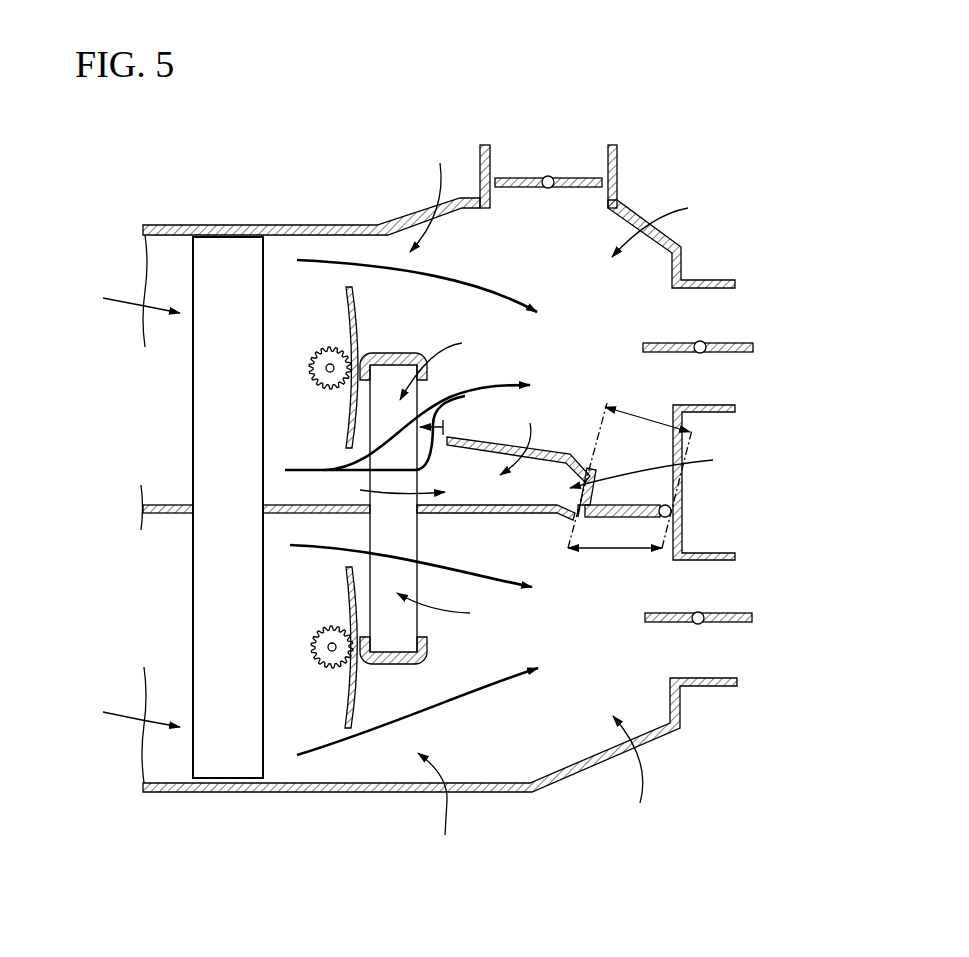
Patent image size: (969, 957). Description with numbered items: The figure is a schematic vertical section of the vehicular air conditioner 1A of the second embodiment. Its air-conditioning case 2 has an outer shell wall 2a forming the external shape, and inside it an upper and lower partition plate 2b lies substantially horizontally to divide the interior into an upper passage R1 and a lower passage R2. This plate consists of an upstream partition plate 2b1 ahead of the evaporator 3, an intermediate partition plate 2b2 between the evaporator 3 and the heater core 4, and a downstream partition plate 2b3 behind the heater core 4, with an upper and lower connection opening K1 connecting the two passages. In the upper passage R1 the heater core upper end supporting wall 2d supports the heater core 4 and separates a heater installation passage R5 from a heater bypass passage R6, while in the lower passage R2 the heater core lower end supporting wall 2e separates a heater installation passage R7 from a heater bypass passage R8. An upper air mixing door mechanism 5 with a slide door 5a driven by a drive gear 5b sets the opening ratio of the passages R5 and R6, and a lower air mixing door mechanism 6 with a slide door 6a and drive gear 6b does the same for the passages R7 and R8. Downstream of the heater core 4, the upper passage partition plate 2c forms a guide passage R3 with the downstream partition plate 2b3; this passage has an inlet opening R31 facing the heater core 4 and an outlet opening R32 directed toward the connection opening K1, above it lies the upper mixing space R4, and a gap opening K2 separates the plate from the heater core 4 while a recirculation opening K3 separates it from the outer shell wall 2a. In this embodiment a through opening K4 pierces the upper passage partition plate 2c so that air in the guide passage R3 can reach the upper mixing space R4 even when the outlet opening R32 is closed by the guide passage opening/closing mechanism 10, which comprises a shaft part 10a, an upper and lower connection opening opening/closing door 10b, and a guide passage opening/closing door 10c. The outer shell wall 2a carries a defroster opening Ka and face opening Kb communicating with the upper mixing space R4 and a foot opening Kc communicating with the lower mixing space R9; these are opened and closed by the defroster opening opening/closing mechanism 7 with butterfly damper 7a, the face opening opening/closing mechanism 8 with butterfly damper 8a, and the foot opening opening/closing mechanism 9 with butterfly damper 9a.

The vehicular air conditioner 1A is at (768, 146).
The air-conditioning case 2 is at (349, 222).
The outer shell wall 2a is at (310, 225).
The upper and lower partition plate 2b is at (346, 492).
The upstream partition plate 2b1 is at (168, 504).
The intermediate partition plate 2b2 is at (293, 513).
The downstream partition plate 2b3 is at (487, 513).
The upper passage partition plate 2c is at (545, 446).
The heater core upper end supporting wall 2d is at (400, 353).
The heater core lower end supporting wall 2e is at (430, 663).
The evaporator 3 is at (217, 250).
The heater core 4 is at (432, 480).
The upper air mixing door mechanism 5 is at (311, 358).
The slide door 5a is at (349, 302).
The drive gear 5b is at (322, 360).
The lower air mixing door mechanism 6 is at (312, 640).
The slide door 6a is at (350, 595).
The drive gear 6b is at (325, 656).
The defroster opening opening/closing mechanism 7 is at (548, 150).
The butterfly damper 7a is at (523, 187).
The face opening opening/closing mechanism 8 is at (727, 338).
The butterfly damper 8a is at (680, 342).
The foot opening opening/closing mechanism 9 is at (729, 649).
The butterfly damper 9a is at (677, 625).
The guide passage opening/closing mechanism 10 is at (679, 509).
The shaft part 10a is at (670, 513).
The upper and lower connection opening opening/closing door 10b is at (625, 518).
The guide passage opening/closing door 10c is at (597, 482).
The defroster opening Ka is at (490, 165).
The face opening Kb is at (725, 288).
The foot opening Kc is at (725, 560).
The upper and lower connection opening K1 is at (610, 550).
The gap opening K2 is at (443, 427).
The recirculation opening K3 is at (637, 403).
The through opening K4 is at (500, 443).
The upper passage R1 is at (123, 298).
The lower passage R2 is at (123, 712).
The guide passage R3 is at (524, 435).
The inlet opening R31 is at (379, 488).
The outlet opening R32 is at (666, 467).
The upper mixing space R4 is at (667, 224).
The heater installation passage R5 is at (446, 364).
The heater bypass passage R6 is at (435, 194).
The heater installation passage R7 is at (453, 609).
The heater bypass passage R8 is at (441, 811).
The lower mixing space R9 is at (636, 775).